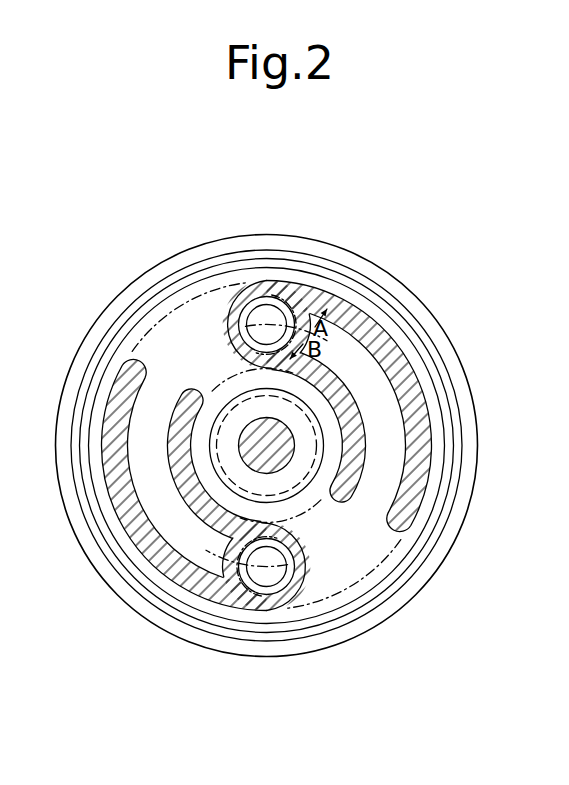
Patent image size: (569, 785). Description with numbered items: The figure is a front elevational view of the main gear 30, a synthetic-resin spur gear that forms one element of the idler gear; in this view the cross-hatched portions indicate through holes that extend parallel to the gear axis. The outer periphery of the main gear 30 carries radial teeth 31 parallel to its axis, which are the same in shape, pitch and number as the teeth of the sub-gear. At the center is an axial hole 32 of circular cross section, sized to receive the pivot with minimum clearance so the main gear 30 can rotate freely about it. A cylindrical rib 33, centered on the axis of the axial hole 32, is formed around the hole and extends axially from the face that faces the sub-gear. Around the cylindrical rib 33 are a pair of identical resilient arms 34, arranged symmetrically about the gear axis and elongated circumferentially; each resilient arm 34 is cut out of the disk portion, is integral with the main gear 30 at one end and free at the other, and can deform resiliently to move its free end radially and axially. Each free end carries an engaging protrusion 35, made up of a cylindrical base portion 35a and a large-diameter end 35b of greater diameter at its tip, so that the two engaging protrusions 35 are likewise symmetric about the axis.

The main gear 30 is at (314, 195).
The radial teeth 31 is at (423, 312).
The axial hole 32 is at (280, 455).
The cylindrical rib 33 is at (276, 488).
The resilient arm 34 is at (372, 388).
The engaging protrusion 35 is at (394, 214).
The cylindrical base portion 35a is at (296, 305).
The large-diameter end 35b is at (322, 285).